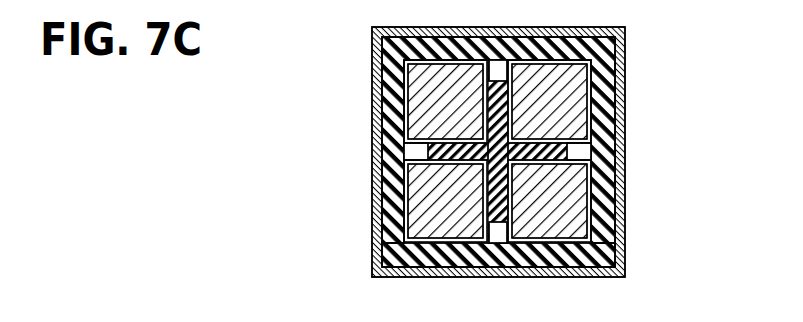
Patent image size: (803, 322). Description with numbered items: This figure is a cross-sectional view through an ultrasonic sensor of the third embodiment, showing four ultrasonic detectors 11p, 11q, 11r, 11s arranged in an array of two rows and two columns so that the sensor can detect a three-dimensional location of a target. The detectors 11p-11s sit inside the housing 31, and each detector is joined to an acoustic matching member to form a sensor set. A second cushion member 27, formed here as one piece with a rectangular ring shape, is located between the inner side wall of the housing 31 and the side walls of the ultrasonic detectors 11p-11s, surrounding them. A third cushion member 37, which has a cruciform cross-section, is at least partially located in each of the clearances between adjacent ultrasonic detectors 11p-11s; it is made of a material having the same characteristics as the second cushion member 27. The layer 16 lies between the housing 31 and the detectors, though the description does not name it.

The ultrasonic detector 11p is at (430, 205).
The ultrasonic detector 11q is at (577, 211).
The ultrasonic detector 11r is at (430, 118).
The ultrasonic detector 11s is at (575, 108).
The sealing resin 16 is at (589, 124).
The second cushion member 27 is at (570, 249).
The housing 31 is at (377, 136).
The third cushion member 37 is at (498, 241).